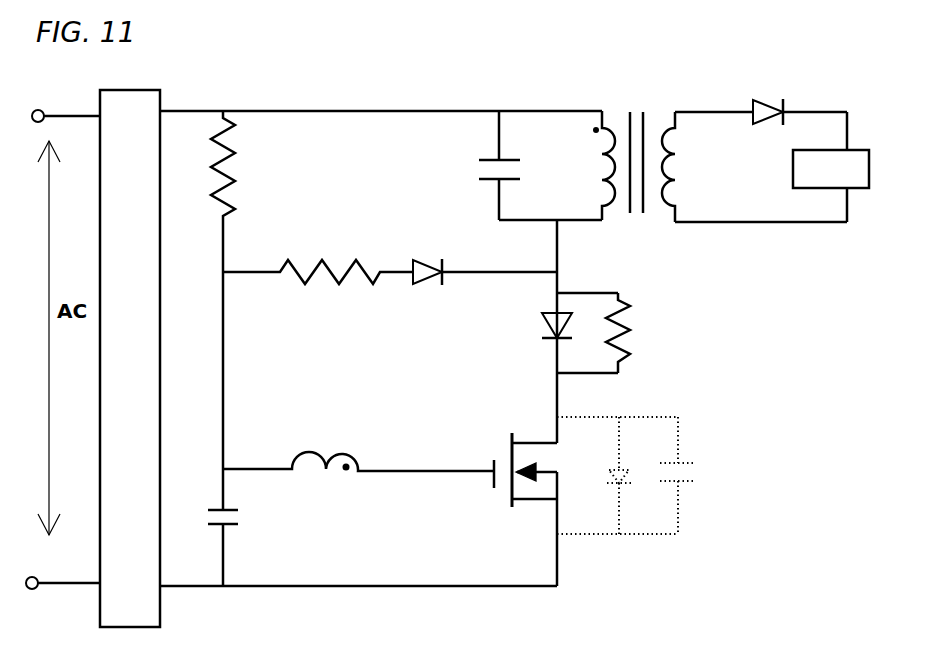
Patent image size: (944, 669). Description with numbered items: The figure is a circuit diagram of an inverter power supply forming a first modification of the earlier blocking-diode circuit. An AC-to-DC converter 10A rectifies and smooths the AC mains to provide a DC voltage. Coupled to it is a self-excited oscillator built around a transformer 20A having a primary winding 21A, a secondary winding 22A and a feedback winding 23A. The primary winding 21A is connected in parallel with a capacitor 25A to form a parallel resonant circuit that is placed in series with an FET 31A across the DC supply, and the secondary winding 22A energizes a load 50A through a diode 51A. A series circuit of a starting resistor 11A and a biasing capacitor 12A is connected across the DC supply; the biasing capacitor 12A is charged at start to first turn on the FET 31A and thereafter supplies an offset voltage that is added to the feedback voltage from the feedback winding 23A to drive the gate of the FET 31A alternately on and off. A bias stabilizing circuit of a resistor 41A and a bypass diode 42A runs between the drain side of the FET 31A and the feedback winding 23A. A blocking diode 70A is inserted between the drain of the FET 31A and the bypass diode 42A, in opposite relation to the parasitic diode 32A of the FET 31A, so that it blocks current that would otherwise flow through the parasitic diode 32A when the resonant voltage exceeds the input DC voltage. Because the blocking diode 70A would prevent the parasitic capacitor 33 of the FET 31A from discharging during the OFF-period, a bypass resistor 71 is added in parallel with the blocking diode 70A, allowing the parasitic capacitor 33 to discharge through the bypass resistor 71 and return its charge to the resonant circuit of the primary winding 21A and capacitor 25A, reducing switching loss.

The AC-to-DC converter (DC supply) 10A is at (157, 81).
The starting resistor 11A is at (243, 153).
The biasing capacitor 12A is at (243, 516).
The transformer 20A is at (641, 137).
The primary winding 21A is at (585, 157).
The secondary winding 22A is at (695, 176).
The feedback winding 23A is at (320, 427).
The capacitor 25A is at (482, 158).
The FET 31A is at (489, 488).
The parasitic diode 32A is at (630, 467).
The parasitic capacitor 33 is at (698, 473).
The resistor 41A is at (336, 247).
The bypass diode 42A is at (426, 247).
The load 50A is at (850, 138).
The diode 51A is at (766, 91).
The blocking diode 70A is at (540, 323).
The bypass resistor 71 is at (638, 333).